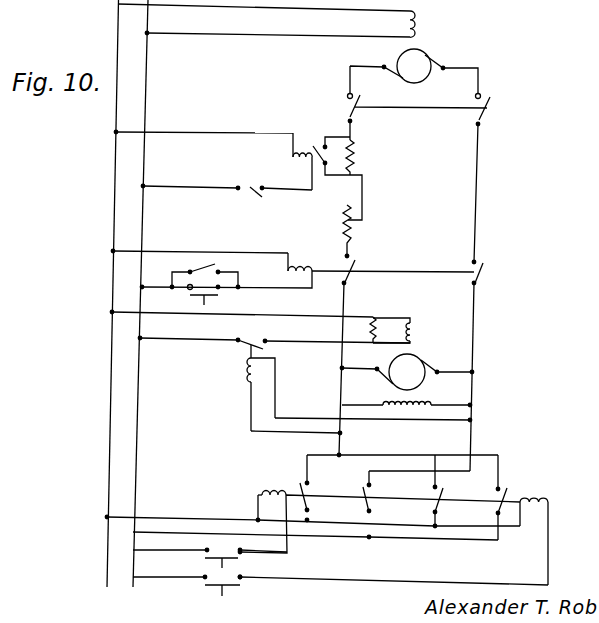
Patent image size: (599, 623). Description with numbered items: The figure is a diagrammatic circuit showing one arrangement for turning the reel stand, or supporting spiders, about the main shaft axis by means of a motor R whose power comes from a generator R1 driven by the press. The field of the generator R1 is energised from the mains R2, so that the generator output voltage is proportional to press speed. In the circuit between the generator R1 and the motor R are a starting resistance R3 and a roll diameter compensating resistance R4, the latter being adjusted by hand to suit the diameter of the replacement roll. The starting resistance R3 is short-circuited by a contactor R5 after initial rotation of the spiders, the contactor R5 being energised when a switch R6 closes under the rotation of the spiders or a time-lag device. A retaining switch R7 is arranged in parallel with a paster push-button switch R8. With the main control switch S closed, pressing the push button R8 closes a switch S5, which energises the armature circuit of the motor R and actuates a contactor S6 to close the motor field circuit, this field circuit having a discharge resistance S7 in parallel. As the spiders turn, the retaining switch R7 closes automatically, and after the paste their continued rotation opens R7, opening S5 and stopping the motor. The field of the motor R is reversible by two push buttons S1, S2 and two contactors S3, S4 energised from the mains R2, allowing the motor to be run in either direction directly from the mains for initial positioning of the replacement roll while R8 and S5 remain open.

The motor R is at (407, 375).
The generator R1 is at (418, 58).
The mains R2 is at (147, 23).
The starting resistance R3 is at (352, 155).
The roll diameter compensating resistance R4 is at (353, 228).
The contactor R5 is at (304, 150).
The switch R6 is at (252, 182).
The retaining switch R7 is at (203, 266).
The paster push-button switch R8 is at (213, 298).
The main control switch S is at (492, 107).
The push button S1 is at (203, 557).
The push button S2 is at (202, 586).
The contactor S3 is at (295, 490).
The contactor S4 is at (512, 485).
The switch S5 is at (485, 268).
The contactor S6 is at (248, 346).
The discharge resistance S7 is at (379, 326).